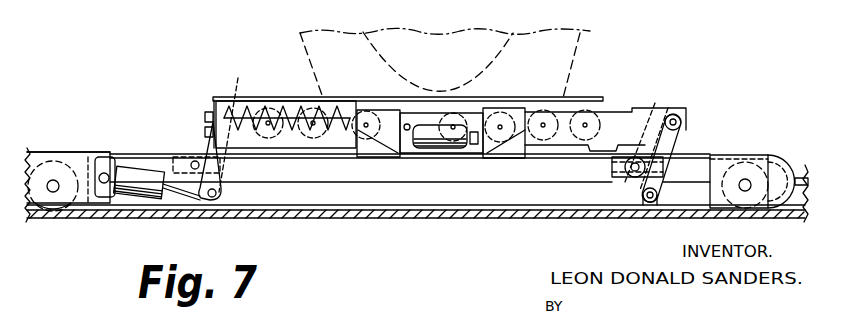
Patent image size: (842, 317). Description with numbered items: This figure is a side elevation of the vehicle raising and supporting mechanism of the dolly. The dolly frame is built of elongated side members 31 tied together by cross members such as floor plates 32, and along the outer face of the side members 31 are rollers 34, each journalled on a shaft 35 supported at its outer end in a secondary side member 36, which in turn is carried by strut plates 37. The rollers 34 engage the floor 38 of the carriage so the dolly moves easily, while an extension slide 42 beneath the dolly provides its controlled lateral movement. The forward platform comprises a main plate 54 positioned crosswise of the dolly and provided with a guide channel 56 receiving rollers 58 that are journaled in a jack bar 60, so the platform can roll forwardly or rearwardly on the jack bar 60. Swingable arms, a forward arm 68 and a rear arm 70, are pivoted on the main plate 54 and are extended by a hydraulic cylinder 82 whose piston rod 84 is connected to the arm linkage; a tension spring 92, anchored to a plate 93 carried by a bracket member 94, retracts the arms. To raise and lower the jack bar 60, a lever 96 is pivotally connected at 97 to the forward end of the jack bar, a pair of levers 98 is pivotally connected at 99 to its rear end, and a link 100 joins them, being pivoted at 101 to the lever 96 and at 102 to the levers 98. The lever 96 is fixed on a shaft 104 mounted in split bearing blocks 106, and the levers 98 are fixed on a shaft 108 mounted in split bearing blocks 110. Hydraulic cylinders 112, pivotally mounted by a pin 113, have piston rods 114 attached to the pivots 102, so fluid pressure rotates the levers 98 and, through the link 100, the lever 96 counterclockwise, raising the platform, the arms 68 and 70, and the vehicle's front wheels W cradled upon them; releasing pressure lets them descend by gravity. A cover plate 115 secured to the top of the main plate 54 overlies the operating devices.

The front wheels W is at (416, 31).
The side members 31 is at (150, 157).
The floor plates 32 is at (70, 152).
The rollers 34 is at (53, 210).
The shaft 35 is at (53, 180).
The secondary side members 36 is at (85, 200).
The strut plates 37 is at (105, 217).
The floor 38 is at (264, 222).
The extension slide 42 is at (806, 173).
The main plate 54 is at (482, 101).
The guide channel 56 is at (421, 110).
The rollers 58 is at (269, 108).
The jack bar 60 is at (641, 108).
The forward arm 68 is at (515, 150).
The rear arm 70 is at (372, 155).
The hydraulic cylinder 82 is at (445, 150).
The piston rod 84 is at (475, 146).
The tension spring 92 is at (352, 125).
The plate 93 is at (207, 116).
The bracket member 94 is at (293, 144).
The lever 96 is at (655, 108).
The pivot 97 is at (682, 121).
The levers 98 is at (229, 170).
The pivot 99 is at (232, 126).
The link 100 is at (410, 193).
The pivot 101 is at (652, 204).
The pivot 102 is at (218, 193).
The shaft 104 is at (630, 175).
The split bearing blocks 106 is at (620, 172).
The shaft 108 is at (200, 150).
The split bearing blocks 110 is at (182, 162).
The hydraulic cylinders 112 is at (135, 168).
The pin 113 is at (104, 173).
The piston rods 114 is at (177, 192).
The cover plate 115 is at (577, 97).